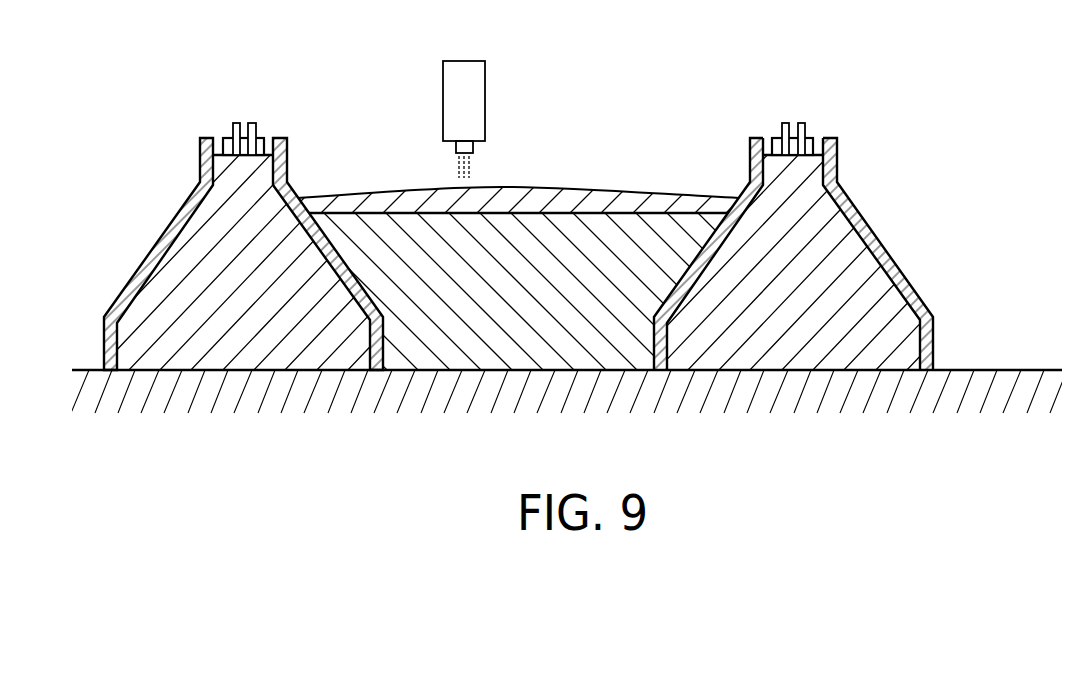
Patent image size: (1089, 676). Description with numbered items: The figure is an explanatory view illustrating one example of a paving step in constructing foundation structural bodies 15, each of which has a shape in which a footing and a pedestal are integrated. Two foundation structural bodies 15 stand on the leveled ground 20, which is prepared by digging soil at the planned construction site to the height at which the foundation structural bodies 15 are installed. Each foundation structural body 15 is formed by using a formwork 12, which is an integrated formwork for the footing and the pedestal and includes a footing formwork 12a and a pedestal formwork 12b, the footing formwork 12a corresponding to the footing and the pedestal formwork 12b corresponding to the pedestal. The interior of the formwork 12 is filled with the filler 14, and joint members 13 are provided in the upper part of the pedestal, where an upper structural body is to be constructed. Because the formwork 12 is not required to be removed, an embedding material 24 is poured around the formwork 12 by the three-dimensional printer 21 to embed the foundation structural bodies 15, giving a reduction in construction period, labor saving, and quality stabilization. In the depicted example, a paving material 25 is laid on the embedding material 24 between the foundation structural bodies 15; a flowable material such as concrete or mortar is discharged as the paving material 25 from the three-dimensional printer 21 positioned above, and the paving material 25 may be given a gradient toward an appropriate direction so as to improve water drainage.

The formwork 12 is at (864, 254).
The footing formwork 12a is at (927, 340).
The pedestal formwork 12b is at (892, 262).
The joint members 13 is at (780, 130).
The filler 14 is at (835, 223).
The foundation structural body 15 is at (155, 229).
The ground 20 is at (993, 370).
The 3D printer 21 is at (457, 97).
The embedding material 24 is at (662, 220).
The paving material 25 is at (585, 197).